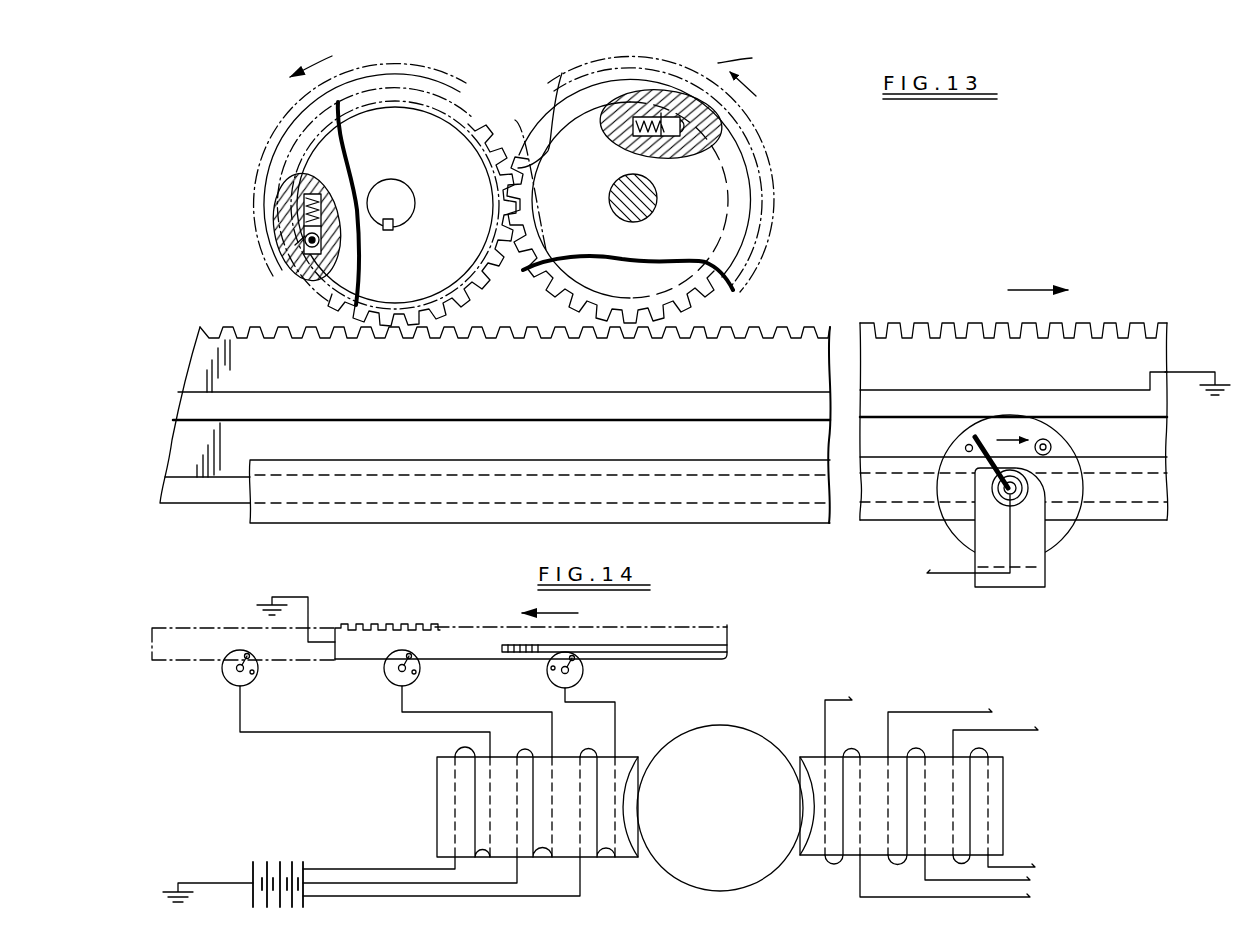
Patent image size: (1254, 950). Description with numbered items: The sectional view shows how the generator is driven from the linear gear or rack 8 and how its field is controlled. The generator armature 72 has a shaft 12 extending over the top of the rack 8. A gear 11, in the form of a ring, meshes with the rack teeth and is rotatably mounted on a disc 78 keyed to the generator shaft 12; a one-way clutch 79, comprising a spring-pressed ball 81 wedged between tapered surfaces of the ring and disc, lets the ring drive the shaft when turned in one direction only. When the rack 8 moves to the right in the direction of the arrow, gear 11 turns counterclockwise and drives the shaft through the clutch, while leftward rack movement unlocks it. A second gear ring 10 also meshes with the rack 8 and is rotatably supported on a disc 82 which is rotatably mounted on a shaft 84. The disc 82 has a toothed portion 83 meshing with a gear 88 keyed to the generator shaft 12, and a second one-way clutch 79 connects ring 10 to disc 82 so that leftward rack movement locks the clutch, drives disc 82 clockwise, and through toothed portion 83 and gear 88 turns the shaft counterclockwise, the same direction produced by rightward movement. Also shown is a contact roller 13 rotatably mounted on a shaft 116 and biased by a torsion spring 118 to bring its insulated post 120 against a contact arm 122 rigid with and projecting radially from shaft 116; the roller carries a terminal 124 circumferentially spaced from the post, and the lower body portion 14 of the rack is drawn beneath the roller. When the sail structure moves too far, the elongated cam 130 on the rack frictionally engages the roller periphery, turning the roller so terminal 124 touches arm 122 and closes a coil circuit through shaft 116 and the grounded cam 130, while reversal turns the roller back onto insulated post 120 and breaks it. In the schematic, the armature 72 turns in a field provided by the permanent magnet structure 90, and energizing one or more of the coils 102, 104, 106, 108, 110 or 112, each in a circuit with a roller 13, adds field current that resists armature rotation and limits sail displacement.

In FIG. 13, the rack 8 is at (1157, 360).
In FIG. 14, the rack 8 is at (406, 625).
In FIG. 13, the second gear ring 10 is at (681, 117).
In FIG. 13, the gear 11 is at (440, 317).
In FIG. 13, the generator shaft 12 is at (394, 188).
In FIG. 13, the contact roller 13 is at (1055, 550).
In FIG. 14, the contact roller 13 is at (228, 685).
In FIG. 13, the bar body 14 is at (1170, 515).
In FIG. 14, the generator armature 72 is at (762, 748).
In FIG. 13, the disc 78 is at (308, 162).
In FIG. 13, the one-way clutch 79 is at (302, 238).
In FIG. 13, the spring-pressed ball 81 is at (295, 245).
In FIG. 13, the disc 82 is at (628, 110).
In FIG. 13, the toothed portion 83 is at (540, 105).
In FIG. 13, the shaft 84 is at (645, 210).
In FIG. 13, the gear 88 is at (500, 160).
In FIG. 14, the permanent magnet structure 90 is at (437, 818).
In FIG. 14, the coil 102 is at (615, 757).
In FIG. 14, the coil 104 is at (553, 750).
In FIG. 14, the coil 106 is at (468, 752).
In FIG. 14, the coil 108 is at (850, 750).
In FIG. 14, the coil 110 is at (915, 750).
In FIG. 14, the coil 112 is at (980, 750).
In FIG. 13, the shaft 116 is at (1040, 510).
In FIG. 13, the torsion spring 118 is at (1005, 495).
In FIG. 13, the insulated post 120 is at (1052, 447).
In FIG. 14, the insulated post 120 is at (241, 657).
In FIG. 13, the contact arm 122 is at (978, 440).
In FIG. 13, the terminal 124 is at (965, 448).
In FIG. 14, the terminal 124 is at (253, 673).
In FIG. 13, the elongated cam 130 is at (952, 398).
In FIG. 14, the elongated cam 130 is at (702, 642).